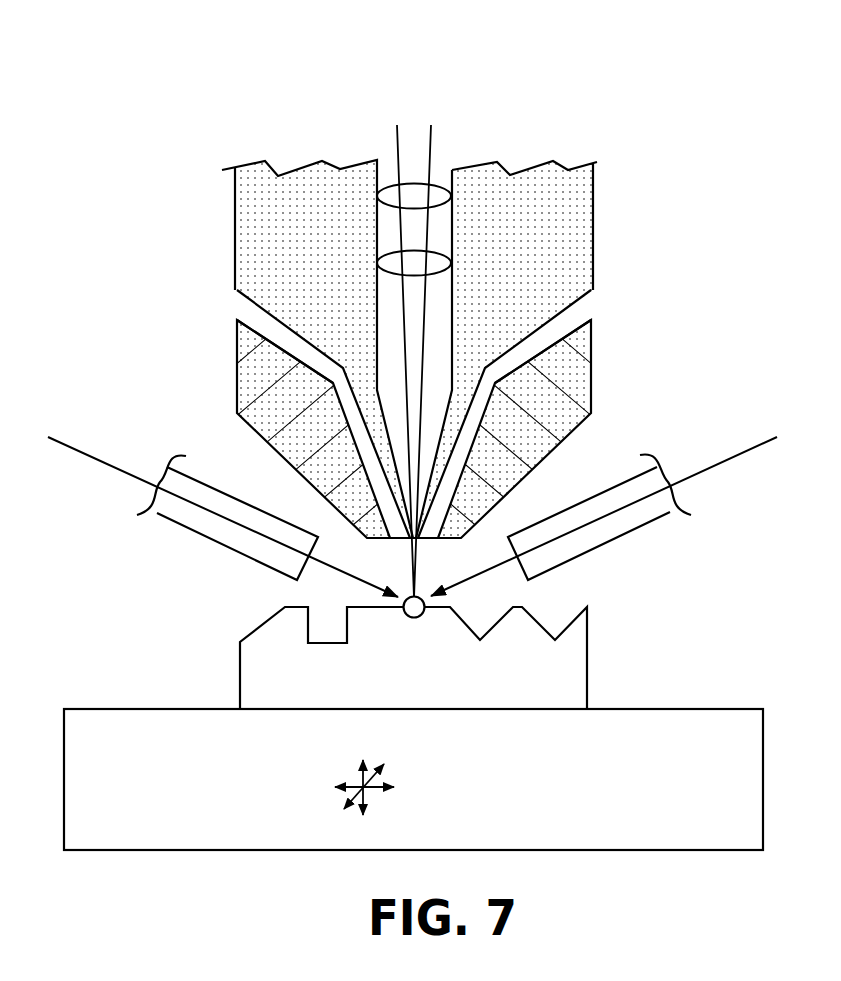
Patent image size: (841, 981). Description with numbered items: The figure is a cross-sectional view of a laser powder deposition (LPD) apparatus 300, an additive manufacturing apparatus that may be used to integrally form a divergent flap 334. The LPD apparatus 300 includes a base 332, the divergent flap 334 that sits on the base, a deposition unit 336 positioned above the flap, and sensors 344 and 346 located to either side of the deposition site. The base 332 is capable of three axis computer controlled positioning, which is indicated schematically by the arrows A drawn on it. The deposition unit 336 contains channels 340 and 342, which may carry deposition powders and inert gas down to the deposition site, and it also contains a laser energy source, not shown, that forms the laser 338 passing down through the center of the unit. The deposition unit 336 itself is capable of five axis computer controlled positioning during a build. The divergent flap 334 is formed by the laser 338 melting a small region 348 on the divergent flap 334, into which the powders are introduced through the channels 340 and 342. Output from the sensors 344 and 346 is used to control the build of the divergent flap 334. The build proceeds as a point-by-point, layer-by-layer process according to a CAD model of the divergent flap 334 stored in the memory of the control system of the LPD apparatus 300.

The laser powder deposition (LPD) apparatus 300 is at (673, 95).
The base 332 is at (732, 780).
The divergent flap 334 is at (570, 692).
The deposition unit 336 is at (621, 195).
The laser 338 is at (413, 154).
The channel 340 is at (583, 308).
The channel 342 is at (244, 311).
The sensor 344 is at (650, 515).
The sensor 346 is at (185, 517).
The small region 348 is at (425, 604).
The arrows A is at (398, 772).